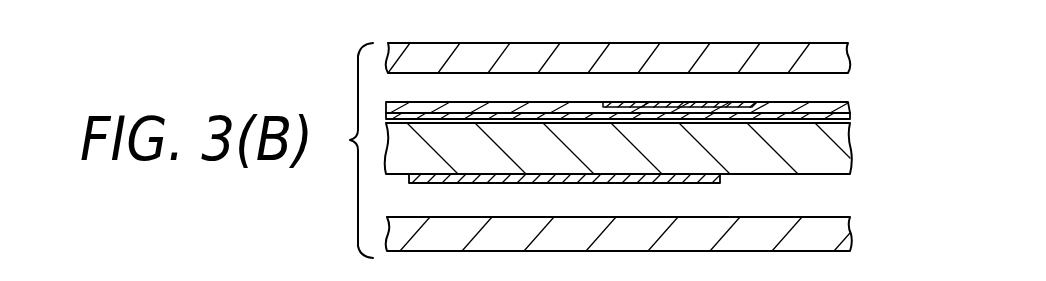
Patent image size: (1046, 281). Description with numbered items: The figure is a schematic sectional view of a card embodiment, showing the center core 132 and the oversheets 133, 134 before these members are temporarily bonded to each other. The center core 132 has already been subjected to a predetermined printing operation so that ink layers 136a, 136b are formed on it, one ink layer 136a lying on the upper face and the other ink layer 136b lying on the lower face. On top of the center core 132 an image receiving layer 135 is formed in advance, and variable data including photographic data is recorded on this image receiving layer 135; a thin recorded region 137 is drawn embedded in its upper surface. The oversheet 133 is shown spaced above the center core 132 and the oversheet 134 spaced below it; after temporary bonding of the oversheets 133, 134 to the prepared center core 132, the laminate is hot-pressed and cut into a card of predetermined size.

The center core 132 is at (847, 154).
The oversheet 133 is at (849, 52).
The oversheet 134 is at (848, 235).
The image receiving layer 135 is at (843, 109).
The ink layer 136a is at (843, 116).
The ink layer 136b is at (722, 181).
The conductive pattern 137 is at (623, 103).